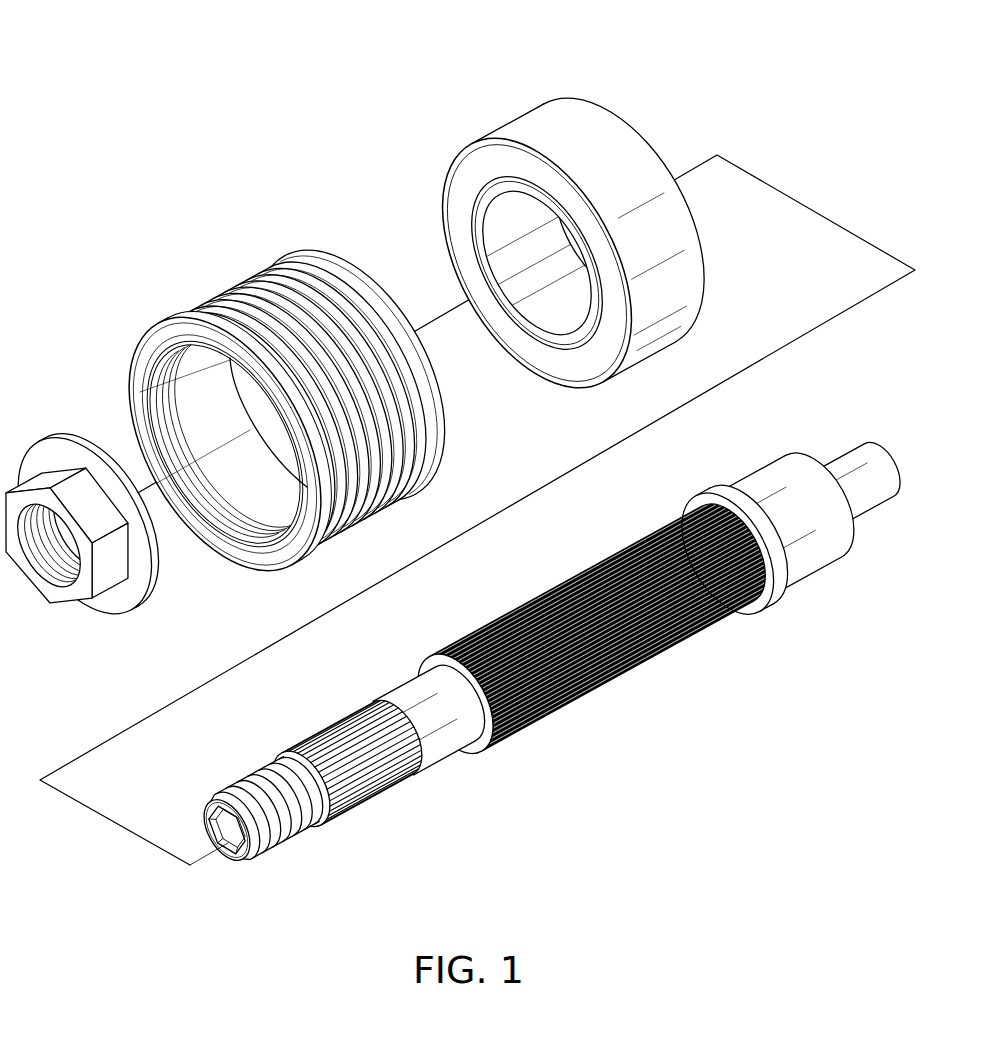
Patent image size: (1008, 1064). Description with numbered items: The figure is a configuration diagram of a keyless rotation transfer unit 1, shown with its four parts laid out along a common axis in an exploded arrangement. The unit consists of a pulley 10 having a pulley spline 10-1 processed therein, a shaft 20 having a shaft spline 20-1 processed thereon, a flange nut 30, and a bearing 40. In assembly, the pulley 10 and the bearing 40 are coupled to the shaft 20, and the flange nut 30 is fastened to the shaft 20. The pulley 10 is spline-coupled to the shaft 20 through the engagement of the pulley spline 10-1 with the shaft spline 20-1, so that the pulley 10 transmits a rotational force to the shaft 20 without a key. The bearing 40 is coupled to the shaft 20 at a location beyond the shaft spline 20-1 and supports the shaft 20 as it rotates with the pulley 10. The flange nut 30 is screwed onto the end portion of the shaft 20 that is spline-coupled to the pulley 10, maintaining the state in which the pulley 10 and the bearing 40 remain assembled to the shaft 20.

The keyless rotation transfer unit 1 is at (488, 495).
The pulley 10 is at (253, 298).
The pulley spline 10-1 is at (243, 405).
The shaft 20 is at (578, 696).
The shaft spline 20-1 is at (379, 811).
The flange nut 30 is at (83, 483).
The bearing 40 is at (605, 134).